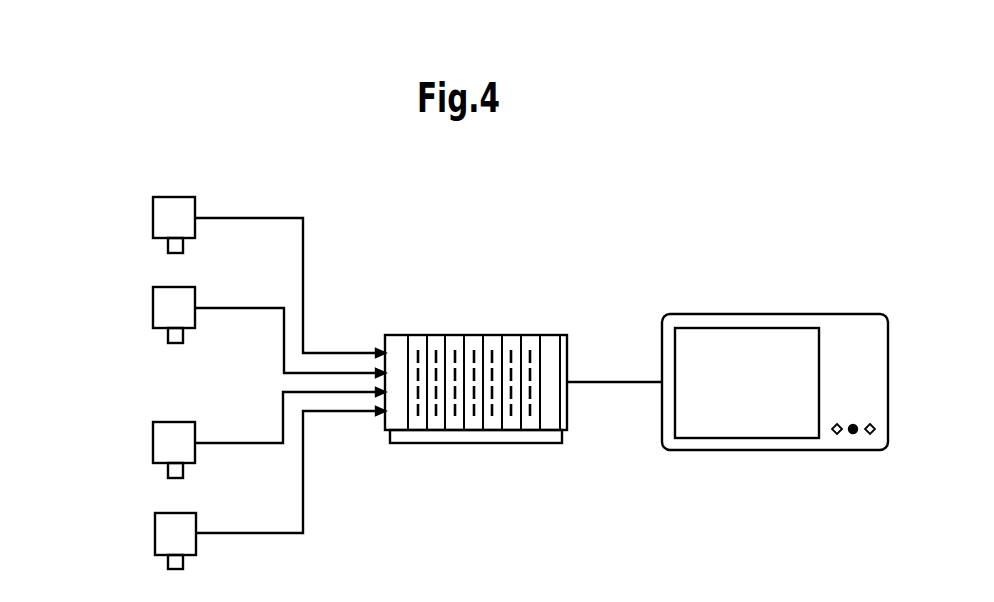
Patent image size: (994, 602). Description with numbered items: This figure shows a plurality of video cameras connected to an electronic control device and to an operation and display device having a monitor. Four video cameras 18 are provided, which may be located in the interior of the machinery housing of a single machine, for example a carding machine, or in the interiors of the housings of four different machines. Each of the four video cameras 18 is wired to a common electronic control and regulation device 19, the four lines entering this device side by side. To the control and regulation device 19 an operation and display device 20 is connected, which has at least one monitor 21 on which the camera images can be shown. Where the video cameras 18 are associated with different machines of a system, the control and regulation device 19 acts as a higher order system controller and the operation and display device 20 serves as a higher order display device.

The video camera 18 is at (162, 232).
The electronic control and regulation device 19 is at (493, 335).
The operation and display device 20 is at (770, 312).
The monitor 21 is at (715, 425).